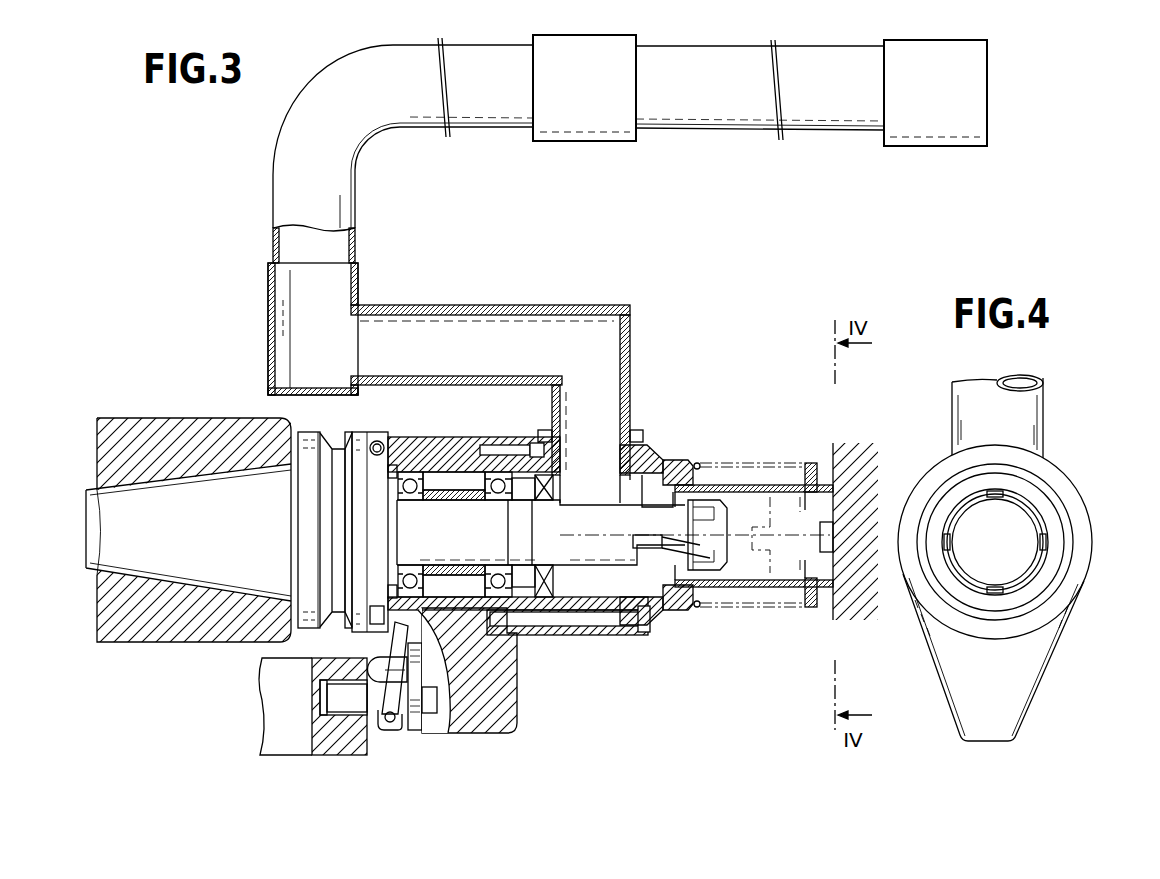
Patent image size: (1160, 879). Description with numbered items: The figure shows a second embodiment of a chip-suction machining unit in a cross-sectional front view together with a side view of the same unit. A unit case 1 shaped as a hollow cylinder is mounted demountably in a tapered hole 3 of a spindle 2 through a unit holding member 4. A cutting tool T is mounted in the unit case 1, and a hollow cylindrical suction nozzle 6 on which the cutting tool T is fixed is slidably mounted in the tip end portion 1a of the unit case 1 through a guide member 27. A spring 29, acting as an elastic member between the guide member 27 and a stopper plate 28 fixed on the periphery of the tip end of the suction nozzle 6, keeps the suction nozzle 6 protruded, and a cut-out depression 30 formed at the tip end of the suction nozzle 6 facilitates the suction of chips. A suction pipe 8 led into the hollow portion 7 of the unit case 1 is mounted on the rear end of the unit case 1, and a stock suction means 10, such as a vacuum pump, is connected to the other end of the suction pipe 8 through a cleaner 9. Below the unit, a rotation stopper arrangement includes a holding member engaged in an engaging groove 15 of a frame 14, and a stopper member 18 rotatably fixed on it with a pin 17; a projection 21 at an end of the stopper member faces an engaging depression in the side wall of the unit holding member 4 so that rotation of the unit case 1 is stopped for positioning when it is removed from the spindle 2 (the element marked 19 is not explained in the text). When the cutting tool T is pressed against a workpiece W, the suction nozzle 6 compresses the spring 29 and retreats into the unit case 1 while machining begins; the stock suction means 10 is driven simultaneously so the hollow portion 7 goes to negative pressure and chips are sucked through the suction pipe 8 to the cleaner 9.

In FIG. 3, the unit case 1 is at (553, 635).
In FIG. 4, the unit case 1 is at (1060, 635).
In FIG. 3, the tip end portion 1a is at (636, 632).
In FIG. 3, the spindle 2 is at (158, 430).
In FIG. 3, the tapered hole 3 is at (143, 630).
In FIG. 3, the unit holding member 4 is at (338, 455).
In FIG. 3, the suction nozzle 6 is at (748, 590).
In FIG. 4, the suction nozzle 6 is at (1029, 563).
In FIG. 3, the hollow portion 7 is at (592, 590).
In FIG. 3, the suction pipe 8 is at (630, 365).
In FIG. 4, the suction pipe 8 is at (1030, 425).
In FIG. 3, the cleaner 9 is at (583, 130).
In FIG. 3, the stock suction means 10 is at (922, 140).
In FIG. 3, the frame 14 is at (288, 730).
In FIG. 3, the engaging groove 15 is at (320, 745).
In FIG. 3, the pin 17 is at (390, 730).
In FIG. 3, the stopper member 18 is at (403, 715).
In FIG. 3, the stop member 19 is at (373, 665).
In FIG. 3, the projection 21 is at (442, 720).
In FIG. 3, the guide member 27 is at (350, 624).
In FIG. 4, the guide member 27 is at (1050, 487).
In FIG. 3, the stopper plate 28 is at (812, 462).
In FIG. 4, the stopper plate 28 is at (1053, 517).
In FIG. 3, the spring 29 is at (698, 463).
In FIG. 3, the cut-out depression 30 is at (823, 587).
In FIG. 4, the cut-out depression 30 is at (1043, 537).
In FIG. 3, the cutting tool T is at (708, 570).
In FIG. 3, the workpiece W is at (843, 600).